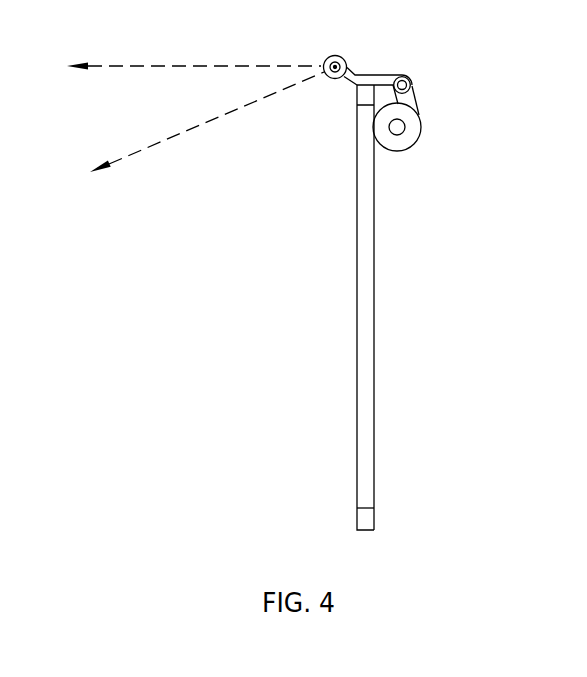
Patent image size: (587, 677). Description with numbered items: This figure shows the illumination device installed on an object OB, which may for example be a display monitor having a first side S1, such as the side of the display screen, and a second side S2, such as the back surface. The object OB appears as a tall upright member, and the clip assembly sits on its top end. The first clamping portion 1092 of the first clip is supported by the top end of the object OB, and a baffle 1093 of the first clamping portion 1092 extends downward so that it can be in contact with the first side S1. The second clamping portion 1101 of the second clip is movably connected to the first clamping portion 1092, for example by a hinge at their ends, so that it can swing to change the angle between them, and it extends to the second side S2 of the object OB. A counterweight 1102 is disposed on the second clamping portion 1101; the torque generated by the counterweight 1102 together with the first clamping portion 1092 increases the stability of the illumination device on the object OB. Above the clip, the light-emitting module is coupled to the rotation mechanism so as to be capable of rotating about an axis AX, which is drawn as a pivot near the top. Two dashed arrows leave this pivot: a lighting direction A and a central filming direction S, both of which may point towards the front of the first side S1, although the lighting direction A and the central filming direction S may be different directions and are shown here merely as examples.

The axis AX is at (332, 52).
The central filming direction S is at (184, 67).
The lighting direction A is at (196, 132).
The first clamping portion 1092 is at (373, 74).
The baffle 1093 is at (353, 97).
The second clamping portion 1101 is at (413, 102).
The counterweight 1102 is at (403, 130).
The first side S1 is at (355, 333).
The second side S2 is at (375, 270).
The object OB is at (367, 520).